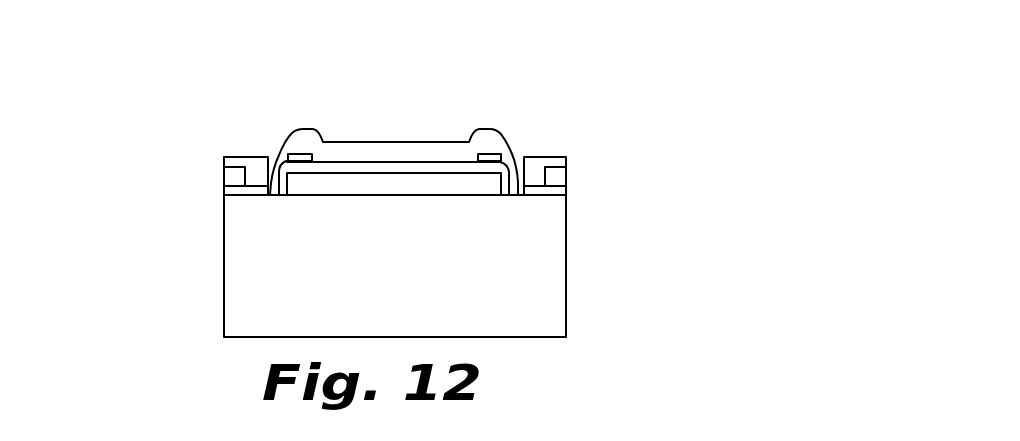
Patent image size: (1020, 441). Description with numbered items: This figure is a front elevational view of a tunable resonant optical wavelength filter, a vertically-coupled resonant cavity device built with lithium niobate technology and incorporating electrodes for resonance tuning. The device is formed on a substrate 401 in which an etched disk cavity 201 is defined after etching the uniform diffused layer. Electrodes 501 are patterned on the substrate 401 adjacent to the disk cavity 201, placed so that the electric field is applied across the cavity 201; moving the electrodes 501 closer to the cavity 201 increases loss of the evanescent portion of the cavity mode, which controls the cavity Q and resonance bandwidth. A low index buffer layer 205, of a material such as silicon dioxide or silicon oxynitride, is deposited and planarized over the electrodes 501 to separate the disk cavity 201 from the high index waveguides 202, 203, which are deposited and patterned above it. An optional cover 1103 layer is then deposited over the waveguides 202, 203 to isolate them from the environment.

The substrate 401 is at (395, 266).
The low index buffer layer 205 is at (685, 183).
The electrodes 501 is at (623, 103).
The cover layer 1103 is at (468, 77).
The waveguide 202 is at (305, 154).
The waveguide 203 is at (503, 148).
The disk cavity 201 is at (494, 200).